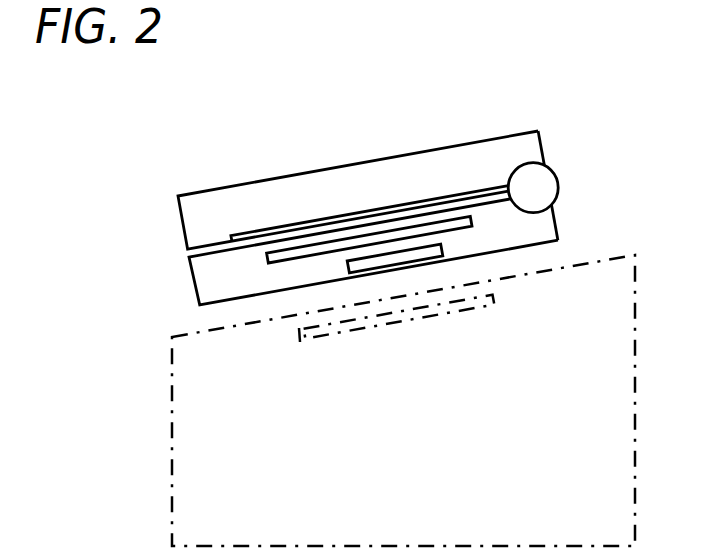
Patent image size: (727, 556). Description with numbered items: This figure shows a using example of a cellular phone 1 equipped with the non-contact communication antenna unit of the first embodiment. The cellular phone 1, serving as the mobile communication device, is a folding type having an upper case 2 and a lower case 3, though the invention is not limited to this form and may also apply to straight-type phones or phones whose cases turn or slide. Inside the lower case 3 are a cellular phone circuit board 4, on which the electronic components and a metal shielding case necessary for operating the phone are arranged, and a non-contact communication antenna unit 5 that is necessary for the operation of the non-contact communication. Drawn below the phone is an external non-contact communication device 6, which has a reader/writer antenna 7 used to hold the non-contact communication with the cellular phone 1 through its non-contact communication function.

The cellular phone 1 is at (361, 163).
The upper case 2 is at (522, 152).
The lower case 3 is at (542, 233).
The cellular phone circuit board 4 is at (265, 257).
The non-contact communication antenna unit 5 is at (347, 266).
The external non-contact communication device 6 is at (172, 417).
The reader/writer antenna 7 is at (299, 334).